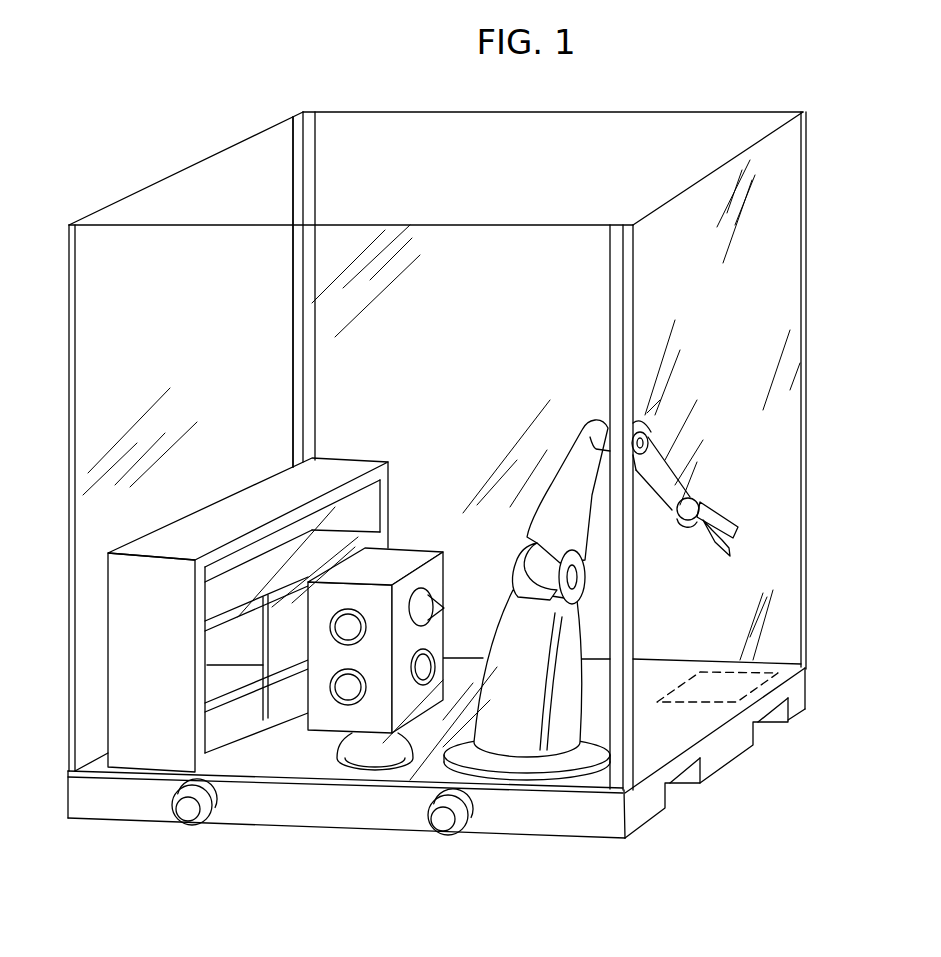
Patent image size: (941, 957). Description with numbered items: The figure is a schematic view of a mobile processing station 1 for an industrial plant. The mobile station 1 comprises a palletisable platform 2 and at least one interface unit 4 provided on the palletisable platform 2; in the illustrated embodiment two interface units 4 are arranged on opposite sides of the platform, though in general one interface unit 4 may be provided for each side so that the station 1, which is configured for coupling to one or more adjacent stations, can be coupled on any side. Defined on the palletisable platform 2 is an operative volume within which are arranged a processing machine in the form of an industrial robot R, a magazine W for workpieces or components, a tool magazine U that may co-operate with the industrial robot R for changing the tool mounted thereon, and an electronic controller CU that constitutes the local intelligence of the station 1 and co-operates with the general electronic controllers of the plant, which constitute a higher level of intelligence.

The mobile processing station 1 is at (855, 201).
The palletisable platform 2 is at (721, 752).
The interface unit 4 is at (192, 813).
The magazine for workpieces or components W is at (258, 510).
The tool magazine U is at (410, 555).
The industrial robot R is at (668, 455).
The electronic controller CU is at (684, 688).